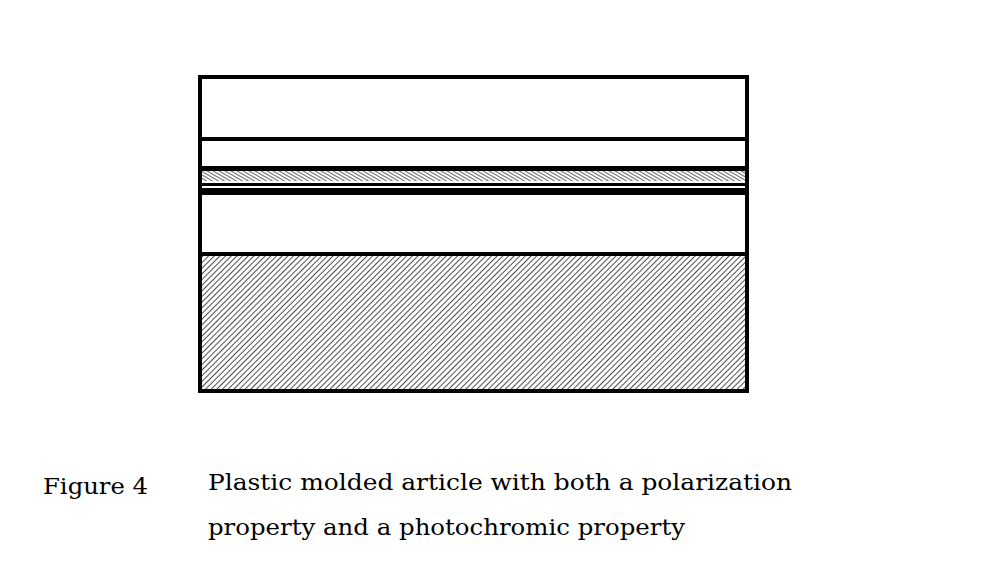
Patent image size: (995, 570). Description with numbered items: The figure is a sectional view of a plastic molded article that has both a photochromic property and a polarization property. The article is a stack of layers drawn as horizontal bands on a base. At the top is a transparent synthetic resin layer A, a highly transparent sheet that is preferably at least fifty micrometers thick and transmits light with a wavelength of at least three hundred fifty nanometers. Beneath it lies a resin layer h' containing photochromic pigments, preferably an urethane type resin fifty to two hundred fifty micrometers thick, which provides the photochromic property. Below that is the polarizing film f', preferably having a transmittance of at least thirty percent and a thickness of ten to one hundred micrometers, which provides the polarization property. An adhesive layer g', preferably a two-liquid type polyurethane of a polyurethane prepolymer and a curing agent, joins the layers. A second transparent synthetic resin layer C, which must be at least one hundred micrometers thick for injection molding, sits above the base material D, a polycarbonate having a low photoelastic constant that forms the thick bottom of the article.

The transparent synthetic resin layer A is at (210, 111).
The resin layer containing a photochromic pigment h' is at (535, 98).
The polarizing film f' is at (538, 184).
The adhesive layer g' is at (541, 256).
The transparent synthetic resin layer C is at (208, 233).
The base material D is at (250, 327).